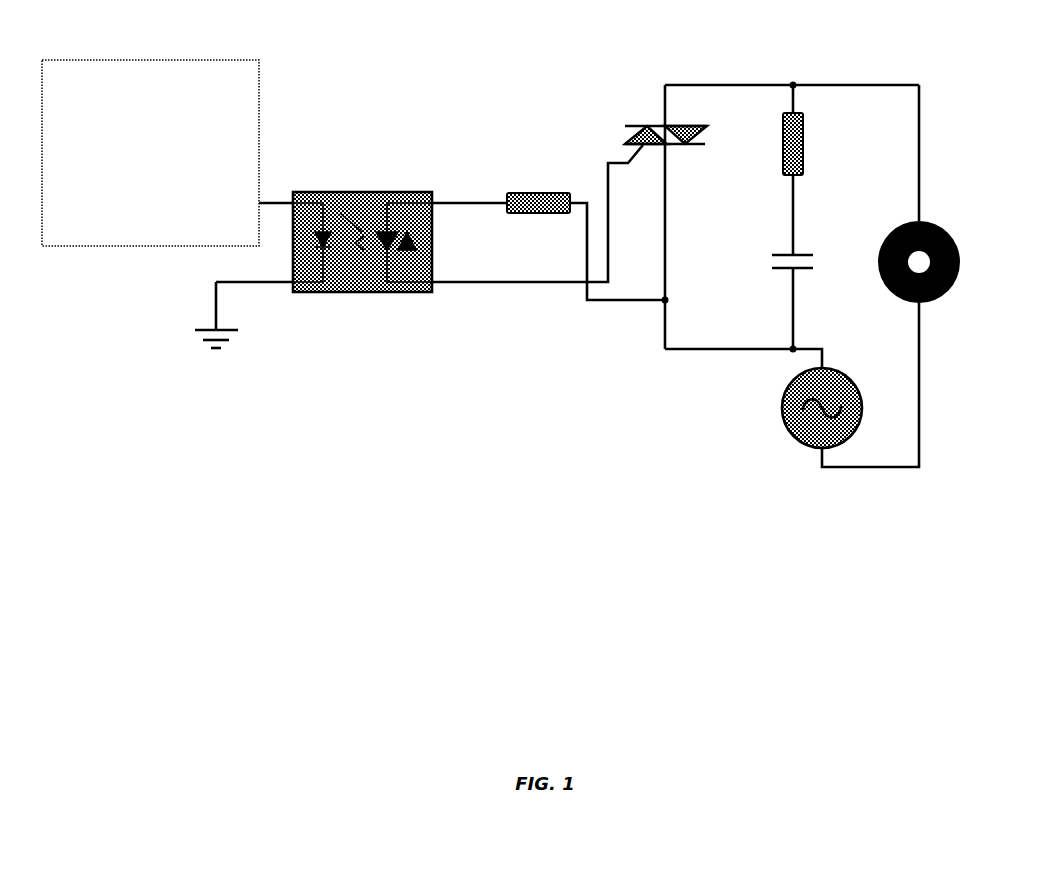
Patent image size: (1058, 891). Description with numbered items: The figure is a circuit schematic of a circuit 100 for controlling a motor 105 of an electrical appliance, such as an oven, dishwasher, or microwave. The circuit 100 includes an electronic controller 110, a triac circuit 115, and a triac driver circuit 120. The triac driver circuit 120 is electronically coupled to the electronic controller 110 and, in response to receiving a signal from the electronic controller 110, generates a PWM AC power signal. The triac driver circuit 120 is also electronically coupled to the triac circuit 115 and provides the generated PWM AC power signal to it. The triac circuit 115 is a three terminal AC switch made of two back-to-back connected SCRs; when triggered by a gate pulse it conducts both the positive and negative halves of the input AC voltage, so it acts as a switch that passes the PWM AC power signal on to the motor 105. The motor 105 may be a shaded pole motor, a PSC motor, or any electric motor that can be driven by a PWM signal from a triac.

The circuit 100 is at (580, 543).
The motor 105 is at (907, 223).
The electronic controller 110 is at (120, 60).
The triac circuit 115 is at (632, 124).
The triac driver circuit 120 is at (413, 192).